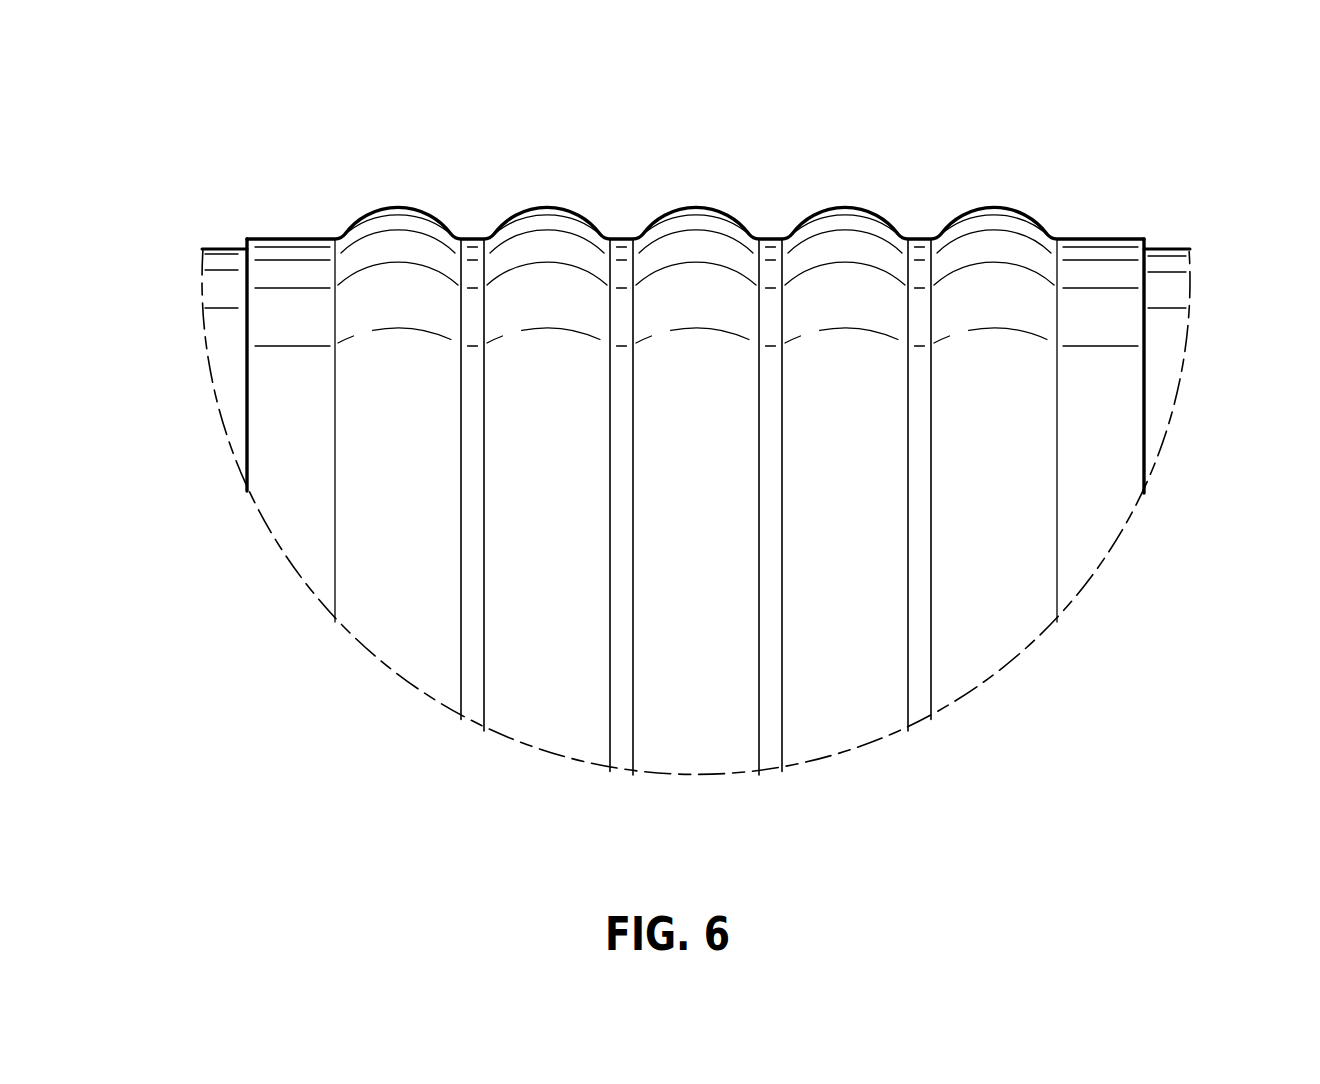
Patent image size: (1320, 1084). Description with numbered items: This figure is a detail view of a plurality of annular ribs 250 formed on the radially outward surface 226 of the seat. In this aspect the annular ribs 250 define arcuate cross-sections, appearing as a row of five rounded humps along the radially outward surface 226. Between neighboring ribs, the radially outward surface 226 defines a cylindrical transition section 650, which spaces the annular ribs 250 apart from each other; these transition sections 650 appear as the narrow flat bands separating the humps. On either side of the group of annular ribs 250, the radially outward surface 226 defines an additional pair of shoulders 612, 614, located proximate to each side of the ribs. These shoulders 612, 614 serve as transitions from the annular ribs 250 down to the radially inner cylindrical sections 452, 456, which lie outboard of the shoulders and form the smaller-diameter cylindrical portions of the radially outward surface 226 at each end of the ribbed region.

The annular ribs 250 is at (338, 128).
The radially outward surface 226 is at (538, 205).
The cylindrical transition section 650 is at (915, 245).
The shoulder 612 is at (245, 243).
The shoulder 614 is at (1145, 242).
The radially inner cylindrical section 452 is at (228, 252).
The radially inner cylindrical section 456 is at (1160, 250).